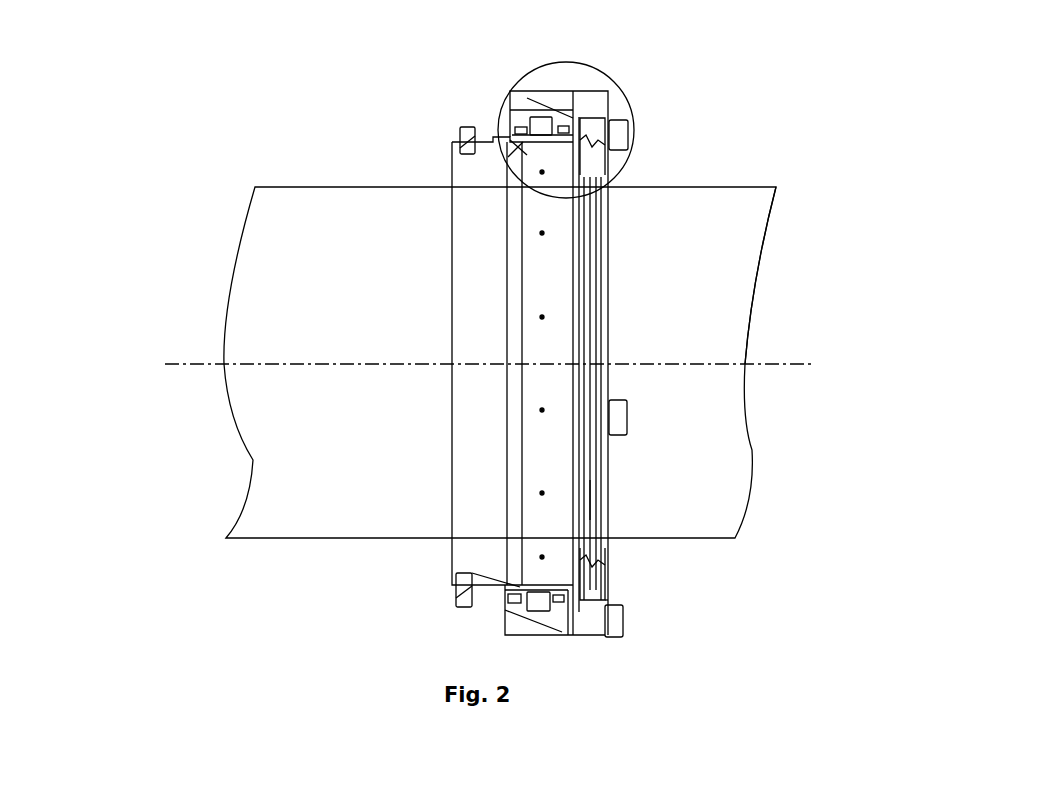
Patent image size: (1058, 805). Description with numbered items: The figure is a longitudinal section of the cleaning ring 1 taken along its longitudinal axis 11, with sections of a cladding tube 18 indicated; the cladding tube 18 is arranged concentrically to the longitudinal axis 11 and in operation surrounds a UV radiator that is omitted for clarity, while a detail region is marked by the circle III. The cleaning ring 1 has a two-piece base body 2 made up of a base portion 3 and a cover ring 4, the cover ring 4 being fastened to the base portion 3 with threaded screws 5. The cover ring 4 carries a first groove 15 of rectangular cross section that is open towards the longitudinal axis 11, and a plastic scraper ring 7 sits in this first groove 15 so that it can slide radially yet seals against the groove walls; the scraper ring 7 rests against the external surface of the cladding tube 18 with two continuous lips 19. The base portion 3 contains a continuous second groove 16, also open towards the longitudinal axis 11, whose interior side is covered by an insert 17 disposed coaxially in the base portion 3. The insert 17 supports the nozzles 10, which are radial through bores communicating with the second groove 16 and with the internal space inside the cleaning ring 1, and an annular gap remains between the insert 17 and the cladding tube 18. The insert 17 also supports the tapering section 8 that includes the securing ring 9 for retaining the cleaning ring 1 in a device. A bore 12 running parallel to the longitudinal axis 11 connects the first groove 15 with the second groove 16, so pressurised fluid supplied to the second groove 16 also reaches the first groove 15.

The cleaning ring 1 is at (680, 567).
The base body 2 is at (538, 647).
The base portion 3 is at (513, 627).
The cover ring 4 is at (588, 627).
The threaded screws 5 is at (617, 135).
The scraper ring 7 is at (594, 218).
The section 8 is at (495, 147).
The securing ring 9 is at (463, 140).
The nozzles 10 is at (542, 233).
The longitudinal axis 11 is at (192, 360).
The bore 12 is at (568, 117).
The first groove 15 is at (588, 597).
The second groove 16 is at (520, 603).
The insert 17 is at (455, 550).
The cladding tube 18 is at (737, 186).
The lips 19 is at (582, 513).
The detail section III is at (628, 92).